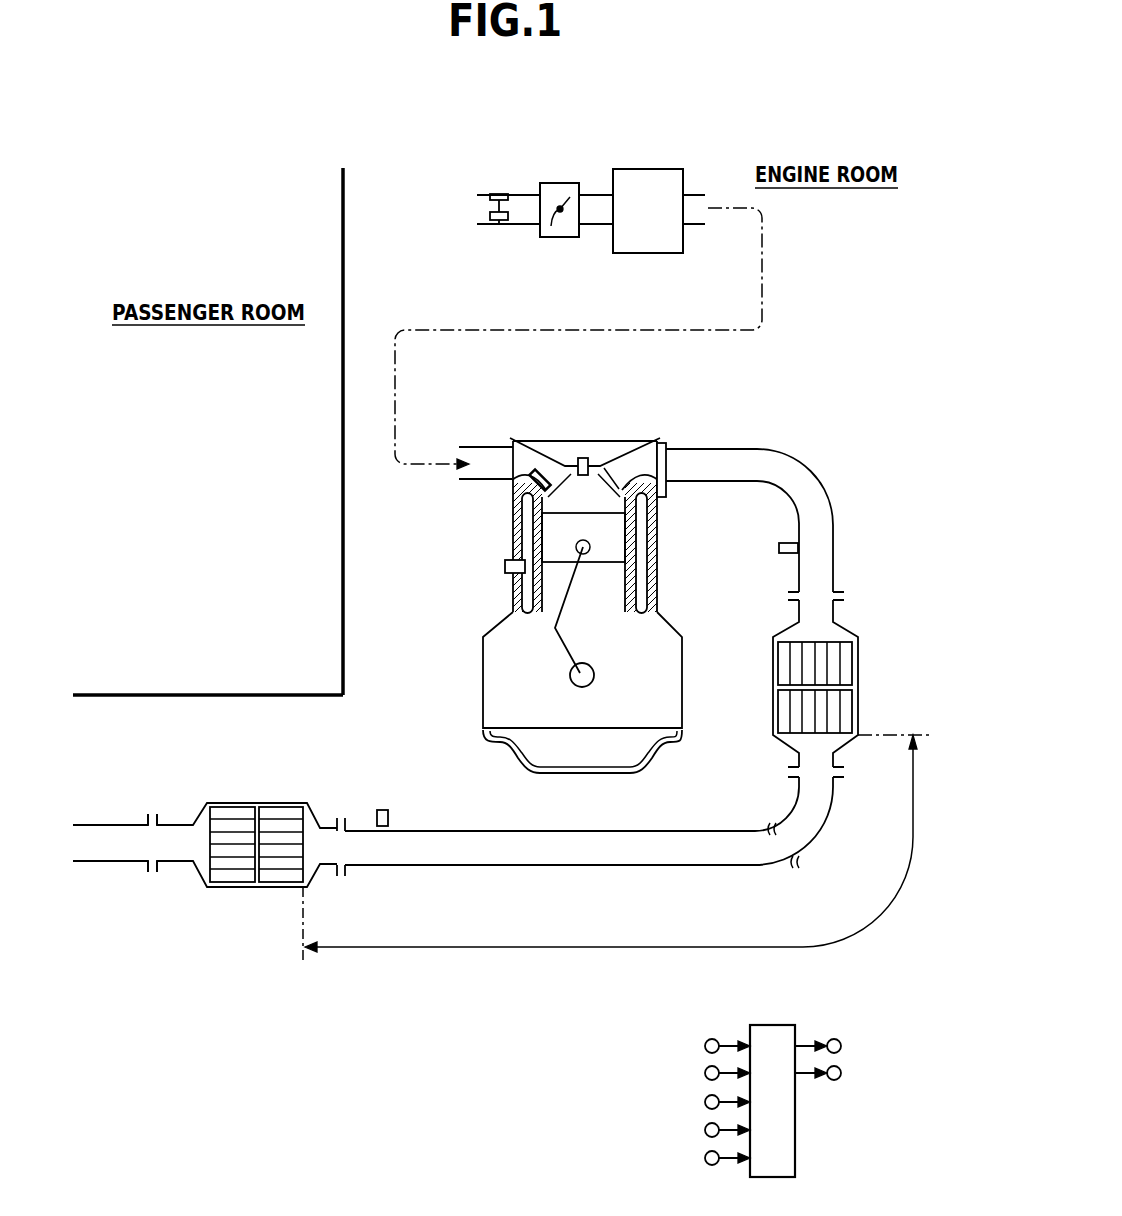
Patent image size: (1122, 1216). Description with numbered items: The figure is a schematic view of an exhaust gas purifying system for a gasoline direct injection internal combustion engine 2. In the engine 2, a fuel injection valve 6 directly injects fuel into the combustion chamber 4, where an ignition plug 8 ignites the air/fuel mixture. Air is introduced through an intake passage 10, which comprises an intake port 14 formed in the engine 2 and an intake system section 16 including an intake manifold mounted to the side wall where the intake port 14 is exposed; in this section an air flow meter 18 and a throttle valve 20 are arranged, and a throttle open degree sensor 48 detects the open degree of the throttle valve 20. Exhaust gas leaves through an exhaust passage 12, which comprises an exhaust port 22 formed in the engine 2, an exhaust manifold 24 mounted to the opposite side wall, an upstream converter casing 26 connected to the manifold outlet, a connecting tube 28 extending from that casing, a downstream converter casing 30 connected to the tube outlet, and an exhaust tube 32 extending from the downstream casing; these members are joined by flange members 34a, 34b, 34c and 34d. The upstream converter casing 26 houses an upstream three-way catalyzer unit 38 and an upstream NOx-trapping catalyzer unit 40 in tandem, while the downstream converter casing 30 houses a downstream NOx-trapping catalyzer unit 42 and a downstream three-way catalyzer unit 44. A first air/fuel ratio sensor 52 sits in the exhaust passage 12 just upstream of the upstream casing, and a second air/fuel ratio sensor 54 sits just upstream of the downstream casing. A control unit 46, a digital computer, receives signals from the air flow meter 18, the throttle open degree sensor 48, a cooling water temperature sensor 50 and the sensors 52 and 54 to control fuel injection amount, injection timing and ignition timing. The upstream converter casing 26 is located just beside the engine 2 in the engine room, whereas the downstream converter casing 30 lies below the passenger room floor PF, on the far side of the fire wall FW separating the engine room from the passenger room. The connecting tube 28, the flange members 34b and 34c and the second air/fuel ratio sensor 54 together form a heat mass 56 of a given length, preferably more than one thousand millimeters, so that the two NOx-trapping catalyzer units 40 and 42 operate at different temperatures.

The internal combustion engine 2 is at (476, 674).
The combustion chamber 4 is at (592, 500).
The fuel injection valve 6 is at (512, 490).
The ignition plug 8 is at (583, 458).
The intake passage 10 is at (698, 195).
The exhaust passage 12 is at (774, 480).
The intake port 14 is at (510, 446).
The intake system section 16 is at (698, 227).
The air flow meter 18 is at (499, 228).
The throttle valve 20 is at (561, 240).
The exhaust port 22 is at (661, 443).
The exhaust manifold 24 is at (735, 449).
The upstream converter casing 26 is at (853, 683).
The connecting tube 28 is at (813, 842).
The downstream converter casing 30 is at (266, 890).
The exhaust tube 32 is at (100, 862).
The flange member 34a is at (838, 590).
The flange member 34b is at (840, 778).
The flange member 34c is at (355, 866).
The flange member 34d is at (146, 871).
The upstream three-way catalyzer unit 38 is at (835, 672).
The upstream NOx-trapping catalyzer unit 40 is at (835, 715).
The downstream NOx-trapping catalyzer unit 42 is at (280, 882).
The downstream three-way catalyzer unit 44 is at (236, 882).
The control unit 46 is at (788, 1162).
The throttle open degree sensor 48 is at (563, 183).
The cooling water temperature sensor 50 is at (505, 567).
The first air/fuel ratio sensor 52 is at (780, 545).
The second air/fuel ratio sensor 54 is at (384, 810).
The heat mass 56 is at (710, 948).
The fire wall FW is at (343, 583).
The passenger room floor PF is at (190, 695).